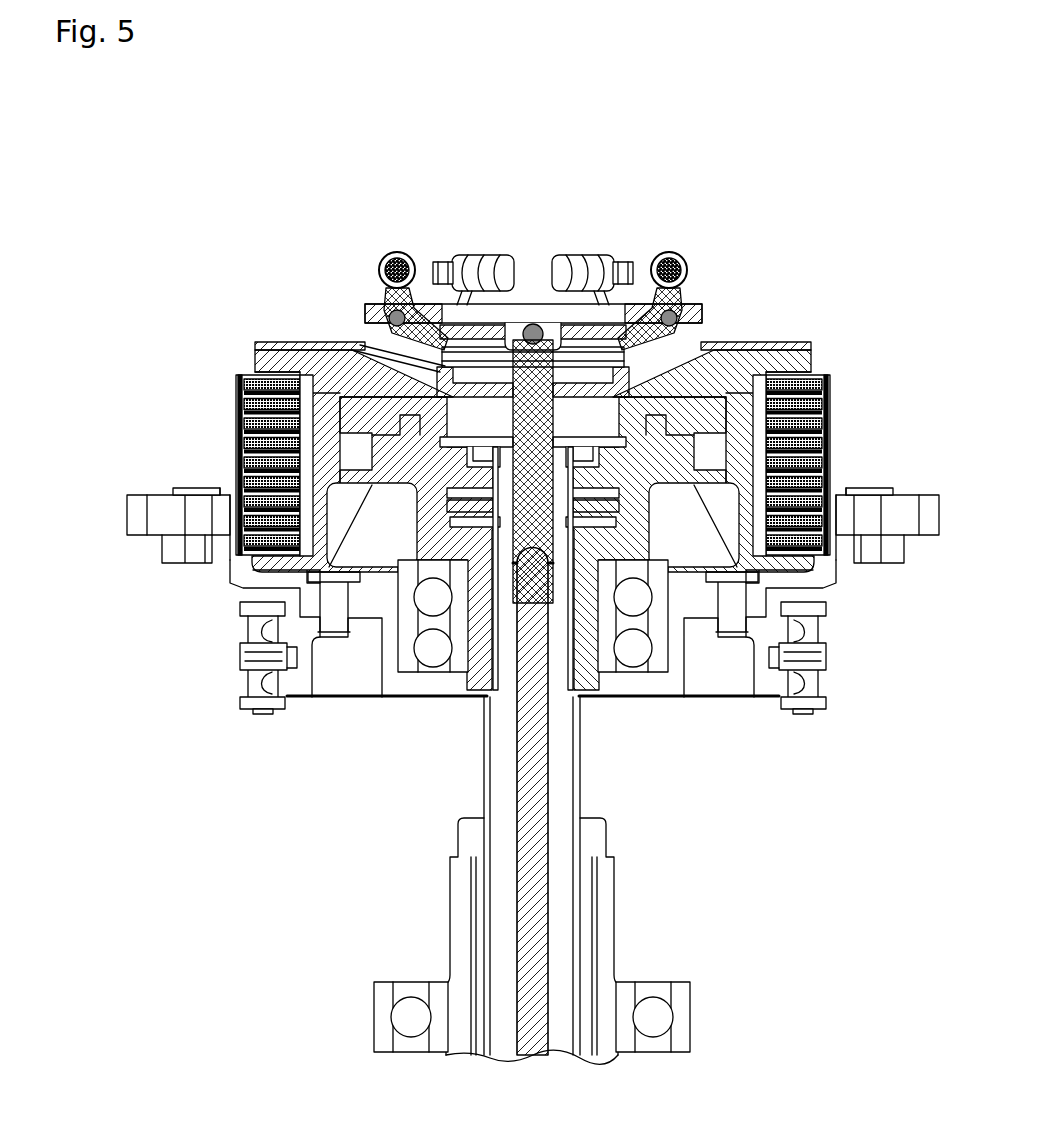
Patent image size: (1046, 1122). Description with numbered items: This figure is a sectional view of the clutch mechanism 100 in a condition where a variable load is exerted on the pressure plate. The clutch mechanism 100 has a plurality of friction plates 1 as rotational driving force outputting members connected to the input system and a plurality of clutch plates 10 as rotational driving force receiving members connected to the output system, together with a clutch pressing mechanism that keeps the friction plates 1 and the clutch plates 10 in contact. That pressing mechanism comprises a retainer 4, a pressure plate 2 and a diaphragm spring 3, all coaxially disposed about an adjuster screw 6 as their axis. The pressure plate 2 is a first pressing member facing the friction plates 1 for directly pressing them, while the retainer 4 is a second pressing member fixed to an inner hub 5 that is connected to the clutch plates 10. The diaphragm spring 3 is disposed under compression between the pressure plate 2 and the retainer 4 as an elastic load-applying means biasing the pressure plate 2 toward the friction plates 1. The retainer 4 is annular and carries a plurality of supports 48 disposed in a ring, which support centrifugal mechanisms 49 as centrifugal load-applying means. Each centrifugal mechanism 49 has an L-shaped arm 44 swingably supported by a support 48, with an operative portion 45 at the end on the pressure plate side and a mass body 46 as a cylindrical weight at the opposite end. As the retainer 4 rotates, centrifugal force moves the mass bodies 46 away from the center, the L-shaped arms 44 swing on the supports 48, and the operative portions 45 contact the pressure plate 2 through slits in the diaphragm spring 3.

The clutch mechanism 100 is at (785, 200).
The friction plates 1 is at (836, 389).
The clutch plates 10 is at (837, 417).
The pressure plate 2 is at (812, 362).
The diaphragm spring 3 is at (790, 346).
The retainer 4 is at (702, 312).
The inner hub 5 is at (683, 425).
The adjuster screw 6 is at (526, 305).
The L-shaped arms 44 is at (380, 305).
The operative portion 45 is at (352, 343).
The mass body 46 is at (389, 252).
The supports 48 is at (376, 322).
The centrifugal mechanisms 49 is at (605, 232).